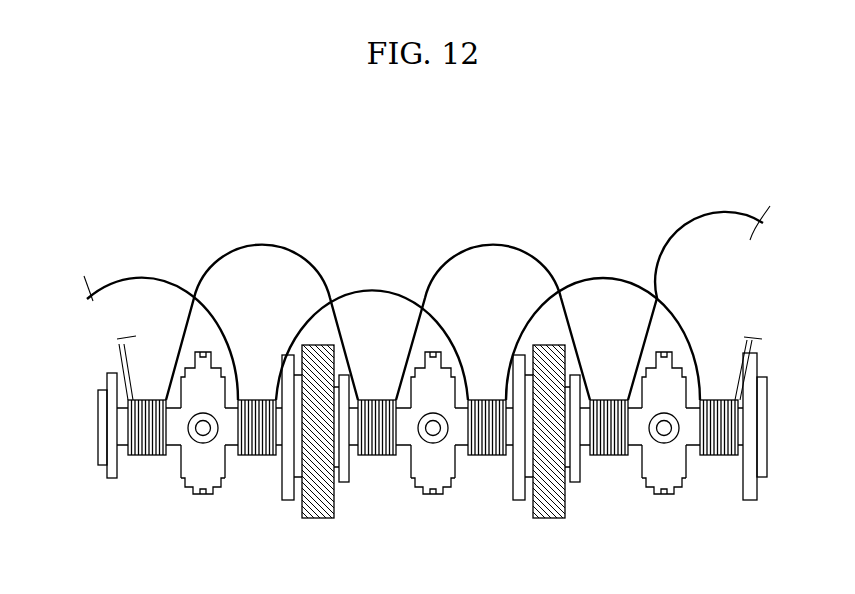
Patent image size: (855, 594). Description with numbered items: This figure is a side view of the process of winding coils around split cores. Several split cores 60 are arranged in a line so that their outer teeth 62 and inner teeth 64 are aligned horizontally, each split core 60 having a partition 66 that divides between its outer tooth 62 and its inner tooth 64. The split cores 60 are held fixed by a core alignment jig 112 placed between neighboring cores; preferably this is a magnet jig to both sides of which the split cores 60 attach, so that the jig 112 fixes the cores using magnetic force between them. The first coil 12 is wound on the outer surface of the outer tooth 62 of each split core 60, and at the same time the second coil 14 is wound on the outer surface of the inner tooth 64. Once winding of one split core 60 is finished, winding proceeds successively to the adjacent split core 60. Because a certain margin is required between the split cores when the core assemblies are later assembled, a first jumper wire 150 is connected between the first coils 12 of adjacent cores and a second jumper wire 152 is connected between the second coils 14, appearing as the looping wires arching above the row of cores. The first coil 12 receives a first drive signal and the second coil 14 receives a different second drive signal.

The first coil 12 is at (147, 463).
The second coil 14 is at (262, 475).
The split core 60 is at (218, 345).
The outer tooth 62 is at (168, 460).
The inner tooth 64 is at (277, 447).
The partition 66 is at (227, 457).
The core alignment jig 112 is at (318, 513).
The first jumper wire 150 is at (262, 210).
The second jumper wire 152 is at (375, 277).